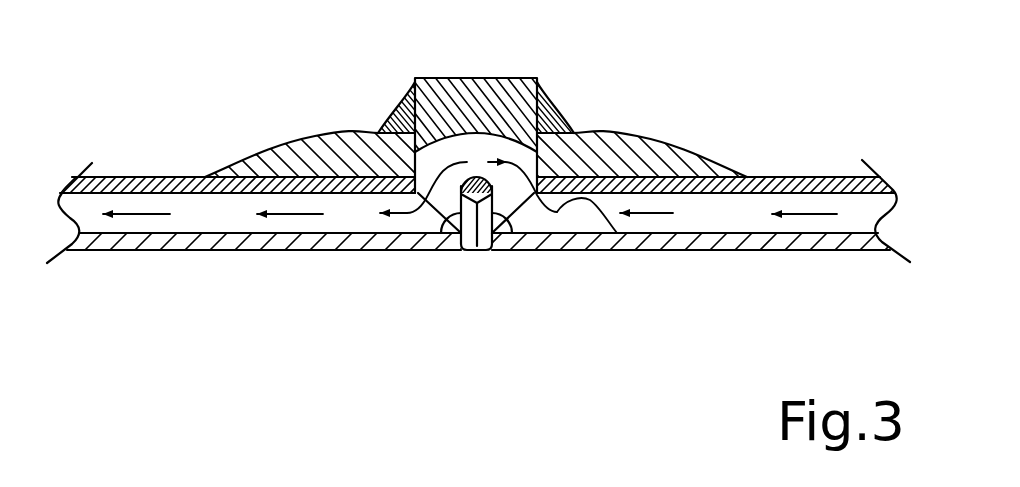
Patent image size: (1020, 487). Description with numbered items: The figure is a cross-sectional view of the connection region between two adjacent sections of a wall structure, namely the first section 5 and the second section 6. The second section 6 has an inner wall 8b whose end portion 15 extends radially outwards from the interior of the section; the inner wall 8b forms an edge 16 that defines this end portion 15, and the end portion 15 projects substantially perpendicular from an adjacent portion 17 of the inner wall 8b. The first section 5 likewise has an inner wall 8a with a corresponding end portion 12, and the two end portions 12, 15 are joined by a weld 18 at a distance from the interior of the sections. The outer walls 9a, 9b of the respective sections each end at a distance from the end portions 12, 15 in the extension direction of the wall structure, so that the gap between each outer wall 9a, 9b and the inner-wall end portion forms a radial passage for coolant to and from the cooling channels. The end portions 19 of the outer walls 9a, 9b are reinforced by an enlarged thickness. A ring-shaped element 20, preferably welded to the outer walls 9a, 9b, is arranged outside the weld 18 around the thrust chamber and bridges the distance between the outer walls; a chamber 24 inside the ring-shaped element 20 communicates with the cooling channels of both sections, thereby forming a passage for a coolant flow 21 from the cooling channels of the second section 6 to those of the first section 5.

The first section 5 is at (147, 275).
The second section 6 is at (823, 278).
The inner wall 8a is at (287, 244).
The inner wall 8b is at (697, 244).
The outer wall 9a is at (150, 183).
The outer wall 9b is at (812, 183).
The end portion 12 is at (435, 250).
The end portion 15 is at (518, 253).
The edge 16 is at (478, 266).
The adjacent portion 17 is at (528, 242).
The weld 18 is at (478, 176).
The end portions of the outer walls 19 is at (310, 140).
The ring-shaped element 20 is at (470, 93).
The coolant flow 21 is at (617, 233).
The chamber 24 is at (452, 147).